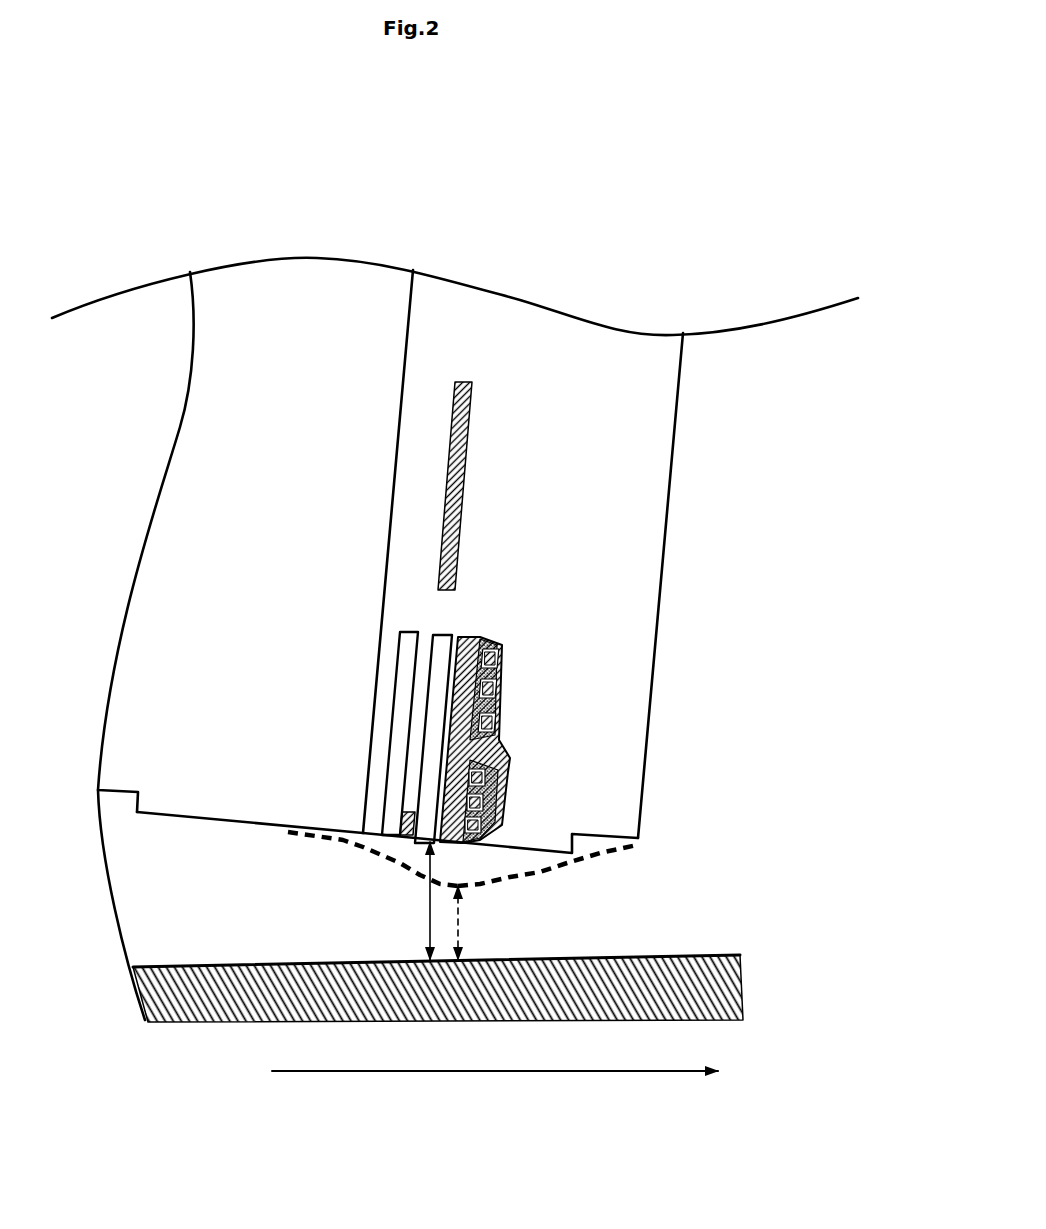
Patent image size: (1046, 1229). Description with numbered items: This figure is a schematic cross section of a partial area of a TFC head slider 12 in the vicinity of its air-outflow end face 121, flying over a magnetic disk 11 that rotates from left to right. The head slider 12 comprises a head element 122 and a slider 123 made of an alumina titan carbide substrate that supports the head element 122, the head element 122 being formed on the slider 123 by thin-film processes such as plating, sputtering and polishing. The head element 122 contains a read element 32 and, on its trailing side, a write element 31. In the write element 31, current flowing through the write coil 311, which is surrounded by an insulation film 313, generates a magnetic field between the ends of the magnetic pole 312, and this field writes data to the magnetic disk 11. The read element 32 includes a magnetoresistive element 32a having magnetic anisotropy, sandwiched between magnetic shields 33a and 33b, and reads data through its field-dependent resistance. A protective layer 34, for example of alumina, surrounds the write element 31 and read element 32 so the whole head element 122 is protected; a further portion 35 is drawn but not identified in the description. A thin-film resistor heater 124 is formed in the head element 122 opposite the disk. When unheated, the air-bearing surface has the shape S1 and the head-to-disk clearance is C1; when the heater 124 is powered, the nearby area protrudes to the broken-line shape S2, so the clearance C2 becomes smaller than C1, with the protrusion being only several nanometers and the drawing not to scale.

The magnetic disk 11 is at (662, 957).
The head slider 12 is at (565, 245).
The air-outflow end face 121 is at (673, 442).
The head element 122 is at (722, 592).
The slider 123 is at (112, 793).
The heater 124 is at (467, 500).
The write element 31 is at (617, 740).
The write coil 311 is at (507, 653).
The magnetic pole 312 is at (507, 793).
The insulation film 313 is at (507, 705).
The read element 32 is at (338, 875).
The magnetoresistive element 32a is at (405, 841).
The magnetic shield 33a is at (442, 635).
The magnetic shield 33b is at (395, 657).
The protective layer 34 is at (423, 370).
The bottom wall 35 is at (180, 817).
The ABS surface shape S1 is at (343, 841).
The protruding shape S2 is at (541, 878).
The clearance C1 is at (416, 901).
The clearance C2 is at (477, 923).